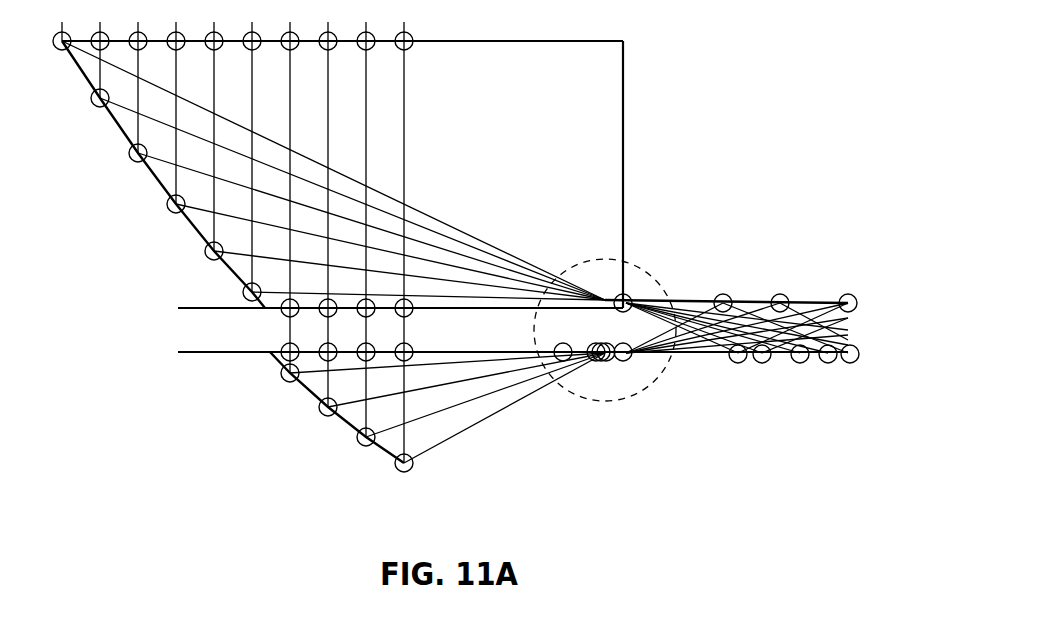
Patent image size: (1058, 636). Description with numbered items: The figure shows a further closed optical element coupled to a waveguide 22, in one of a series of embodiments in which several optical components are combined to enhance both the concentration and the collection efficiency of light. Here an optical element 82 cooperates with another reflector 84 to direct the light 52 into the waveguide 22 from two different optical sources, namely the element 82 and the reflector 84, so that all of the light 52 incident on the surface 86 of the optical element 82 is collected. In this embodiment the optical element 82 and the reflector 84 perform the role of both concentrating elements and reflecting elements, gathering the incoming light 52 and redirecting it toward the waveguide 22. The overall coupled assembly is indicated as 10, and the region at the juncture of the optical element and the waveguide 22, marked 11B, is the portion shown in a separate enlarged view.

The optical device 10 is at (600, 150).
The waveguide 22 is at (197, 330).
The light 52 is at (405, 127).
The optical element 82 is at (158, 180).
The reflector 84 is at (343, 423).
The surface 86 is at (491, 46).
The detail region of FIG. 11B is at (643, 267).